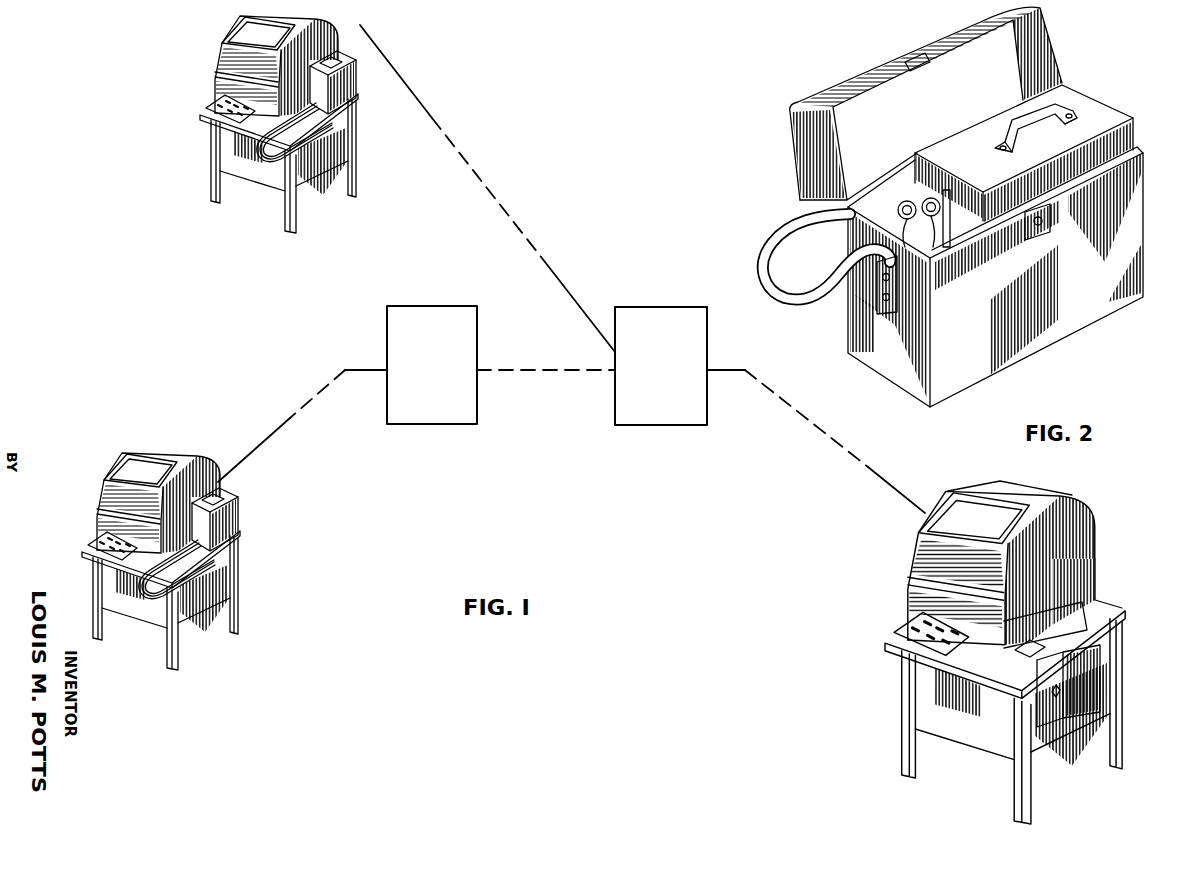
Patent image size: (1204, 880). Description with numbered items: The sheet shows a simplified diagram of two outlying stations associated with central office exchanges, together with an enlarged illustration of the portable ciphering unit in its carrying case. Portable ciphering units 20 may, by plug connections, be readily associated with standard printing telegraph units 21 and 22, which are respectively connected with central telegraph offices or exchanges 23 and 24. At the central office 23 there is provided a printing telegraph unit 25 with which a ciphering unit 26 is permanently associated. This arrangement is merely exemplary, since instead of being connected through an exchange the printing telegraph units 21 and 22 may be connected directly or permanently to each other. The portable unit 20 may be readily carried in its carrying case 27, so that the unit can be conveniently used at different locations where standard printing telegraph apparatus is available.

In FIG. 1, the portable ciphering unit 20 is at (355, 73).
In FIG. 2, the portable ciphering unit 20 is at (1098, 118).
In FIG. 1, the printing telegraph unit 21 is at (225, 60).
In FIG. 1, the printing telegraph unit 22 is at (170, 450).
In FIG. 1, the central telegraph office 23 is at (663, 317).
In FIG. 1, the central telegraph office 24 is at (428, 317).
In FIG. 1, the printing telegraph unit 25 is at (1083, 531).
In FIG. 1, the ciphering unit 26 is at (1090, 676).
In FIG. 2, the carrying case 27 is at (1125, 215).